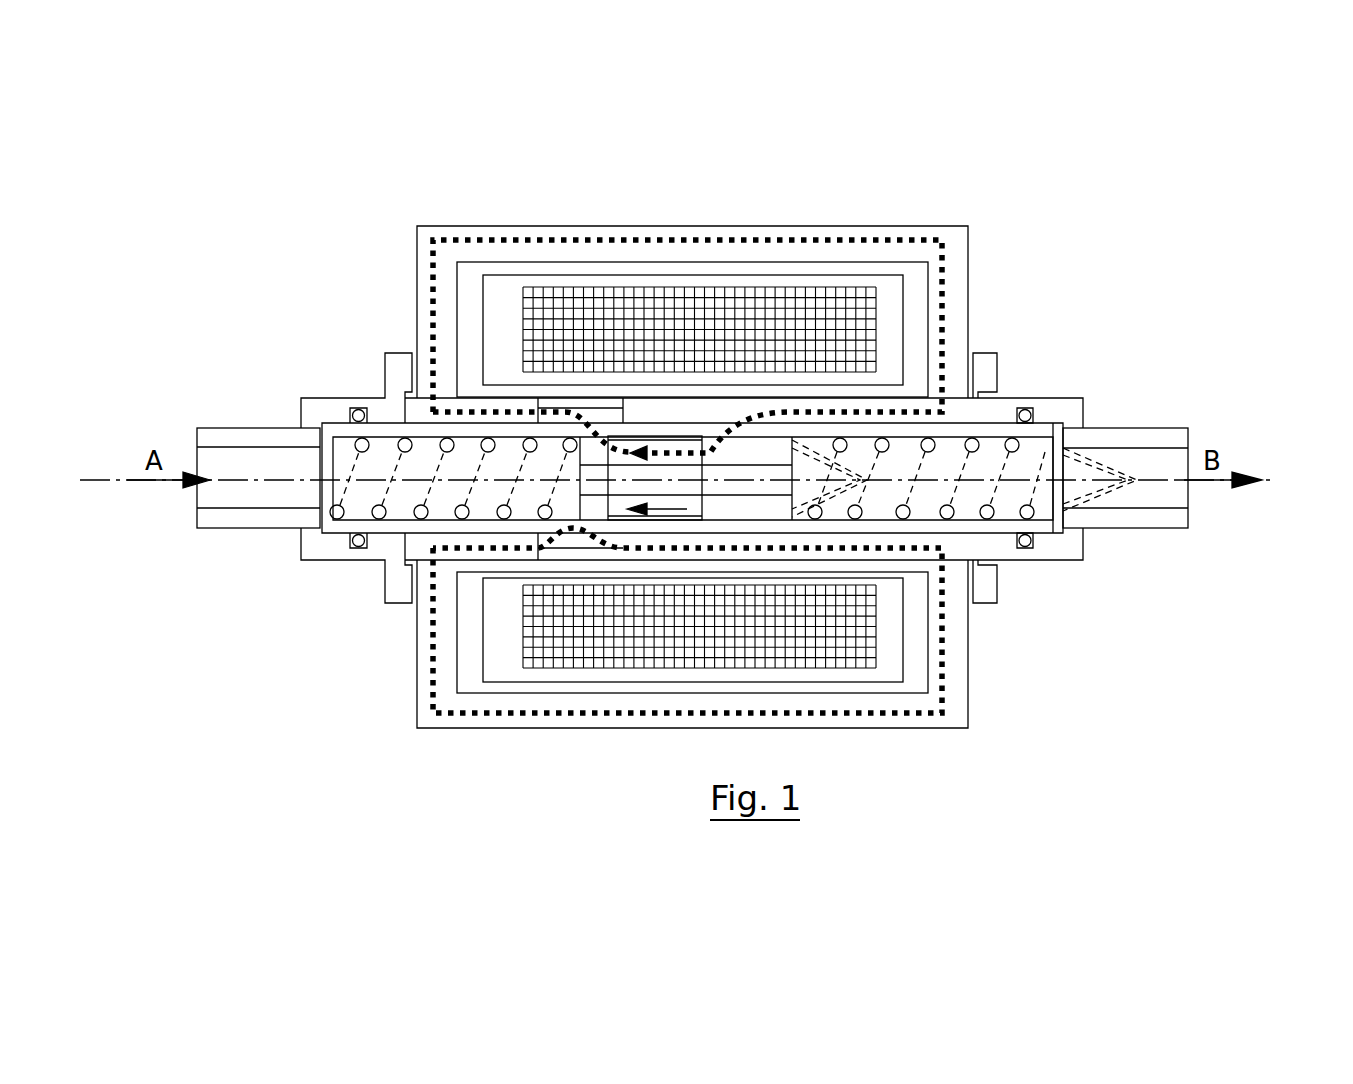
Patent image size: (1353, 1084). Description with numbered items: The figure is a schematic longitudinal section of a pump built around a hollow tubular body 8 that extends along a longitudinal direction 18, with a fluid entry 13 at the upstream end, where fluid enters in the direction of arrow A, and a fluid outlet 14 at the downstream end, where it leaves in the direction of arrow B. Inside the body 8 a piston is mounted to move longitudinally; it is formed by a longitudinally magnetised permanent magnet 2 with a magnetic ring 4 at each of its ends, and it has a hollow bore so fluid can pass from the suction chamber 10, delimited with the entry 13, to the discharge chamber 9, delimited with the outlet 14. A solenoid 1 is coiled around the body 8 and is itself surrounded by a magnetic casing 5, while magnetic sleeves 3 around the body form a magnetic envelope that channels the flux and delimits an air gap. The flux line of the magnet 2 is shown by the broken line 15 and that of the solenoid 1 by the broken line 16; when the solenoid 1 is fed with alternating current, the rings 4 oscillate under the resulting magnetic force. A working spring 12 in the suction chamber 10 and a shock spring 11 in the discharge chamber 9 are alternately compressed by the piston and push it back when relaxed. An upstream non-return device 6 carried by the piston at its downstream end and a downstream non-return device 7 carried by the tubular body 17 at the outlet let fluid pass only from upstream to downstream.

The solenoid 1 is at (725, 330).
The permanent magnet 2 is at (620, 430).
The magnetic sleeve 3 is at (665, 398).
The magnetic ring 4 is at (748, 512).
The magnetic casing 5 is at (505, 728).
The upstream non-return device 6 is at (835, 497).
The downstream non-return device 7 is at (1120, 493).
The hollow tubular body 8 is at (985, 422).
The discharge chamber 9 is at (1065, 430).
The suction chamber 10 is at (413, 410).
The shock spring 11 is at (1016, 470).
The working spring 12 is at (410, 512).
The fluid entry 13 is at (252, 457).
The fluid outlet 14 is at (1150, 458).
The magnet flux line 15 is at (940, 248).
The solenoid flux line 16 is at (428, 632).
The tubular body 17 is at (982, 458).
The longitudinal direction 18 is at (930, 483).